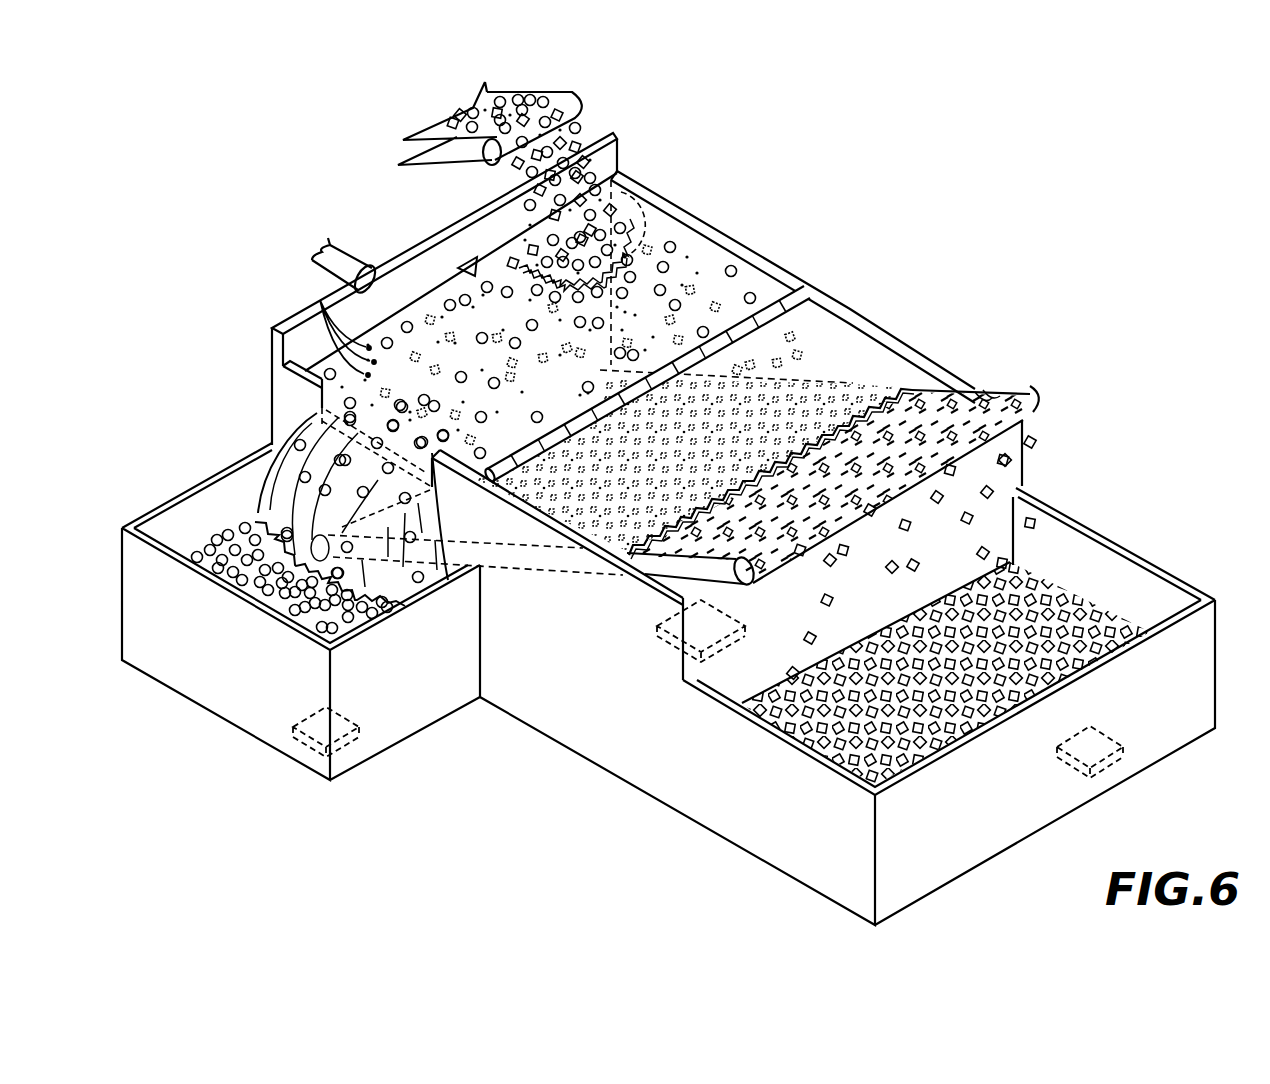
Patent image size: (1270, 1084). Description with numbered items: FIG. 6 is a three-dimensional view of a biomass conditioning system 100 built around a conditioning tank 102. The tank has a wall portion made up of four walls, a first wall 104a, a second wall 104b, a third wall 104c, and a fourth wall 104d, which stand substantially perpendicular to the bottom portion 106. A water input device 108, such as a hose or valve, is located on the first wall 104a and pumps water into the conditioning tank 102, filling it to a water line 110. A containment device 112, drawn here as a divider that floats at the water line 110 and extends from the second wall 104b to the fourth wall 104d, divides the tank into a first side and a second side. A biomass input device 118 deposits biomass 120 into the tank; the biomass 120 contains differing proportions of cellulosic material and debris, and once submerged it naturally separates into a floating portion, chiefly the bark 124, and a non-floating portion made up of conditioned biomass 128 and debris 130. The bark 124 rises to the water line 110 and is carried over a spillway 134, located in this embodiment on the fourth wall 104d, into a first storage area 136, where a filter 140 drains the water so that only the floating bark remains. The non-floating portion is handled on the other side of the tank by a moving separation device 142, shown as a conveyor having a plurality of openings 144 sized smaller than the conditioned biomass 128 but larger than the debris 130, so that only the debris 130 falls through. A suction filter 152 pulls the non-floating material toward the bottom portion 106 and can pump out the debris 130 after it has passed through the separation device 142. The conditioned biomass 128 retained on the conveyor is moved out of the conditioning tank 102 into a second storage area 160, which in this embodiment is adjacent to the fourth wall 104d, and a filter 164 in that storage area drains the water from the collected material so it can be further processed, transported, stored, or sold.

The biomass conditioning system 100 is at (1123, 243).
The conditioning tank 102 is at (218, 376).
The first wall 104a is at (468, 214).
The second wall 104b is at (717, 230).
The third wall 104c is at (995, 478).
The fourth wall 104d is at (292, 395).
The bottom portion 106 is at (520, 736).
The water input device 108 is at (345, 262).
The water line 110 is at (450, 284).
The containment device 112 is at (812, 290).
The biomass input device 118 is at (425, 128).
The biomass 120 is at (598, 126).
The bark 124 is at (733, 266).
The conditioned biomass 128 is at (628, 222).
The debris 130 is at (318, 299).
The spillway 134 is at (280, 475).
The first storage area 136 is at (222, 687).
The filter 140 is at (345, 742).
The moving separation device 142 is at (952, 400).
The openings 144 is at (979, 398).
The suction filter 152 is at (670, 648).
The second storage area 160 is at (985, 822).
The filter 164 is at (1110, 765).